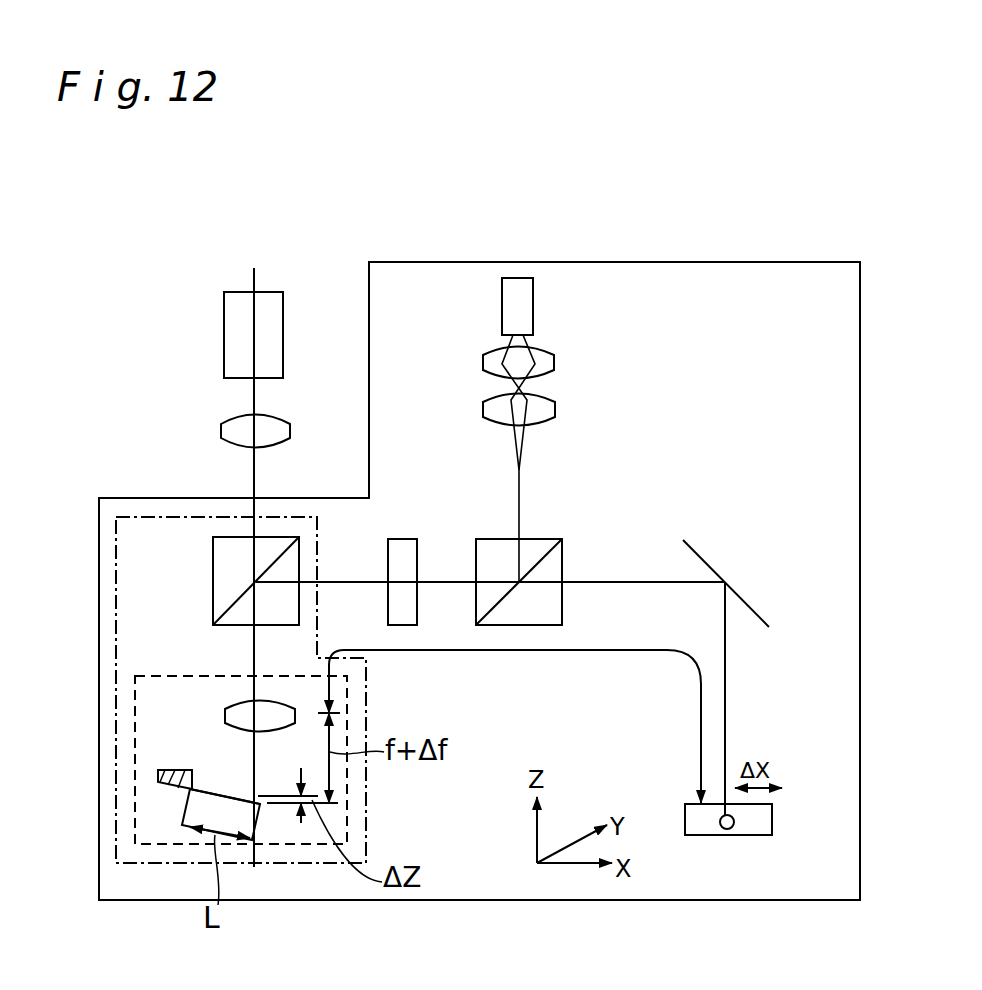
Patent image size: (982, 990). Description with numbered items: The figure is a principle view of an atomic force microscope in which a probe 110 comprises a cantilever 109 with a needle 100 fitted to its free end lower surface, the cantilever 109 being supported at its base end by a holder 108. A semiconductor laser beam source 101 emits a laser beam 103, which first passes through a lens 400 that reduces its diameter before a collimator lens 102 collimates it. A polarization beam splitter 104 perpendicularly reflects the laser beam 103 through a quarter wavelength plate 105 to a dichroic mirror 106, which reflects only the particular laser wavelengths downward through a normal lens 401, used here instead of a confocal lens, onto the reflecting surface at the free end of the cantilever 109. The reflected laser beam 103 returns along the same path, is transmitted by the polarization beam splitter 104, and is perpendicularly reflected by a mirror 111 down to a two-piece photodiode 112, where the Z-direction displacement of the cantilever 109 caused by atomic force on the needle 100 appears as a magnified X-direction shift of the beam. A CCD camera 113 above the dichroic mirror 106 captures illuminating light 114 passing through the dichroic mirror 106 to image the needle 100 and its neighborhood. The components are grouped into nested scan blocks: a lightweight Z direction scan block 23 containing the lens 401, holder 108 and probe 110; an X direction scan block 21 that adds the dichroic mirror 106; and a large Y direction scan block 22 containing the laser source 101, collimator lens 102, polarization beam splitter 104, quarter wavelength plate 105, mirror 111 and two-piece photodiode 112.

The X direction scan block 21 is at (116, 563).
The Y direction scan block 22 is at (518, 900).
The Z direction scan block 23 is at (134, 768).
The needle 100 is at (264, 806).
The semiconductor laser beam source 101 is at (533, 303).
The collimator lens 102 is at (554, 408).
The laser beam 103 is at (522, 462).
The polarization beam splitter 104 is at (538, 540).
The quarter wavelength plate 105 is at (403, 539).
The dichroic mirror 106 is at (228, 537).
The holder 108 is at (165, 788).
The cantilever 109 is at (259, 796).
The probe 110 is at (226, 797).
The mirror 111 is at (693, 550).
The two-piece photodiode 112 is at (772, 820).
The CCD camera 113 is at (224, 338).
The illuminating light 114 is at (255, 472).
The lens 400 is at (487, 360).
The normal lens 401 is at (233, 705).